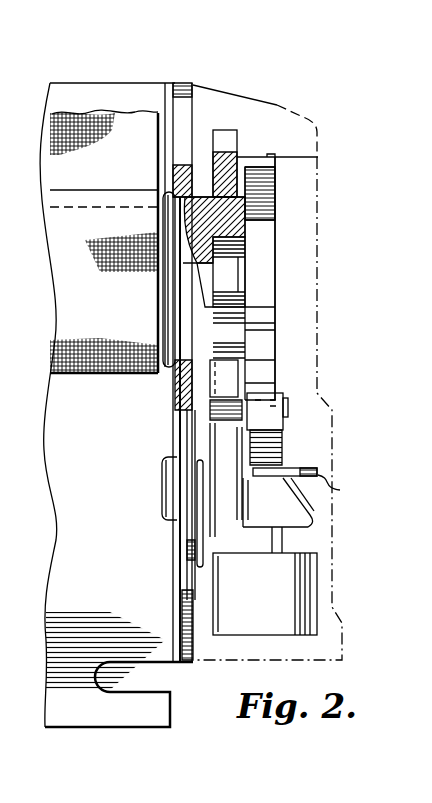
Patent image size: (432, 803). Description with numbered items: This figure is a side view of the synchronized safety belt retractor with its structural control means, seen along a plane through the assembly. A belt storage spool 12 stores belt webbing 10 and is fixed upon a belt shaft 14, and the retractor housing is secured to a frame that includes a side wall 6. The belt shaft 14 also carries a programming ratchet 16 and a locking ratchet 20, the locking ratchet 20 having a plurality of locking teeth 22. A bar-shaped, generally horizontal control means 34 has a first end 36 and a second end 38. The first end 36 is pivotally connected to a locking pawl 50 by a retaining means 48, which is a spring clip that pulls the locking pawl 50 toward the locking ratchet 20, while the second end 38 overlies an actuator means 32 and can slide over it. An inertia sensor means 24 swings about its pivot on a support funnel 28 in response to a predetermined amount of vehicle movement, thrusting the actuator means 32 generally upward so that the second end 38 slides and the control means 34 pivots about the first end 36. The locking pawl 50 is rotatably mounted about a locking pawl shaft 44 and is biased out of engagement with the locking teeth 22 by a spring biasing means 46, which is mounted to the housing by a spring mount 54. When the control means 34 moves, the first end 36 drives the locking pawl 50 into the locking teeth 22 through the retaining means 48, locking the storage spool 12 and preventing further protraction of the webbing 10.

The side wall 6 is at (125, 92).
The belt webbing 10 is at (65, 168).
The belt storage spool 12 is at (158, 307).
The belt shaft 14 is at (232, 267).
The programming ratchet 16 is at (318, 157).
The locking ratchet 20 is at (207, 161).
The locking teeth 22 is at (232, 133).
The inertia sensor means 24 is at (310, 537).
The support funnel 28 is at (313, 505).
The actuator means 32 is at (341, 487).
The control means 34 is at (293, 433).
The first end 36 is at (270, 413).
The second end 38 is at (283, 453).
The locking pawl shaft 44 is at (173, 490).
The spring biasing means 46 is at (200, 510).
The retaining means 48 is at (180, 410).
The locking pawl 50 is at (227, 367).
The spring mount 54 is at (185, 570).